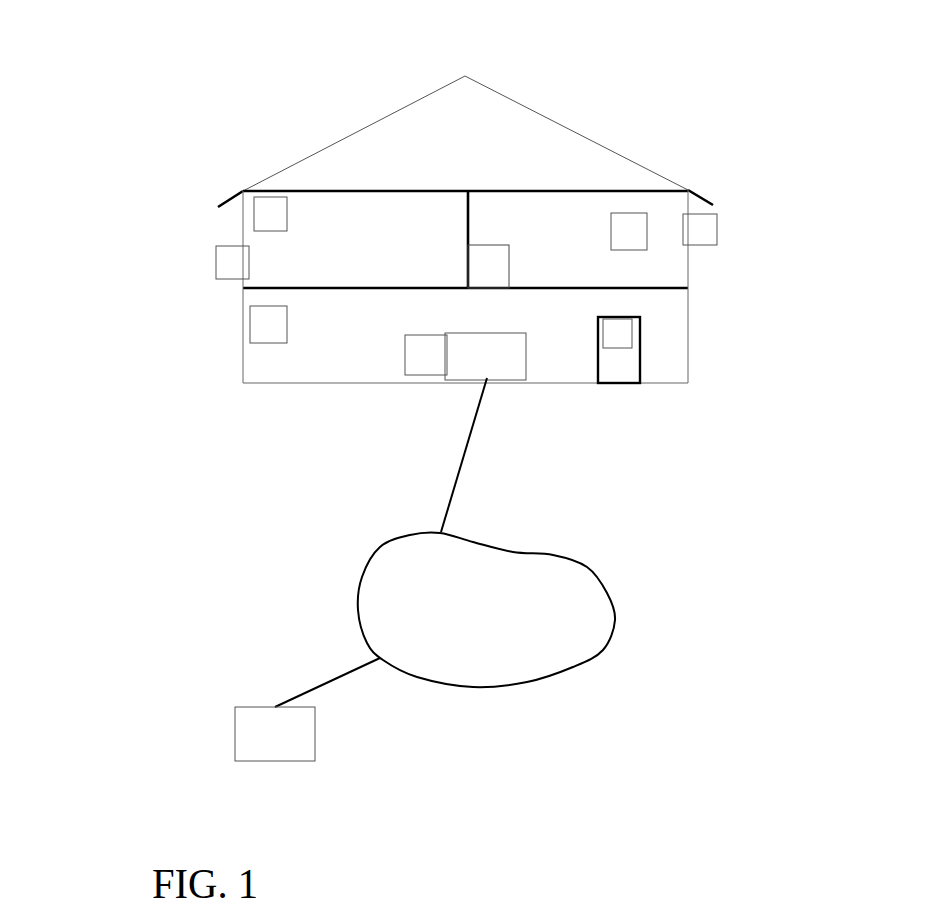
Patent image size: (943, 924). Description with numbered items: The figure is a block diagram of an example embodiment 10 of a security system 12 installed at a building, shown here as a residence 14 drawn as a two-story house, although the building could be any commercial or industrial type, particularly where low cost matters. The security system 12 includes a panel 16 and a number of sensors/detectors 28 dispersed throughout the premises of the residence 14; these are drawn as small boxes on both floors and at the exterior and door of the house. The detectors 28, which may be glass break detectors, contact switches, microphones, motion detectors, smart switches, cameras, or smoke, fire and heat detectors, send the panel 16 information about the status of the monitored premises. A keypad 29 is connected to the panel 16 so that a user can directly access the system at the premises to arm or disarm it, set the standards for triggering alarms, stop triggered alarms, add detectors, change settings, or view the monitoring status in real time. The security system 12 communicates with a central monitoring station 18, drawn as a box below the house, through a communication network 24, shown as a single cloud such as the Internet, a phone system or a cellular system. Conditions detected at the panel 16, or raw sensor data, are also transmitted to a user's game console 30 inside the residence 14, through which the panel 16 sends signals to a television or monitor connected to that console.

The example embodiment 10 is at (340, 67).
The security system 12 is at (660, 407).
The residence 14 is at (645, 166).
The panel 16 is at (526, 380).
The central monitoring station 18 is at (235, 735).
The network 24 is at (486, 532).
The sensors/detectors 28 is at (257, 313).
The keypad 29 is at (426, 375).
The game console 30 is at (488, 266).